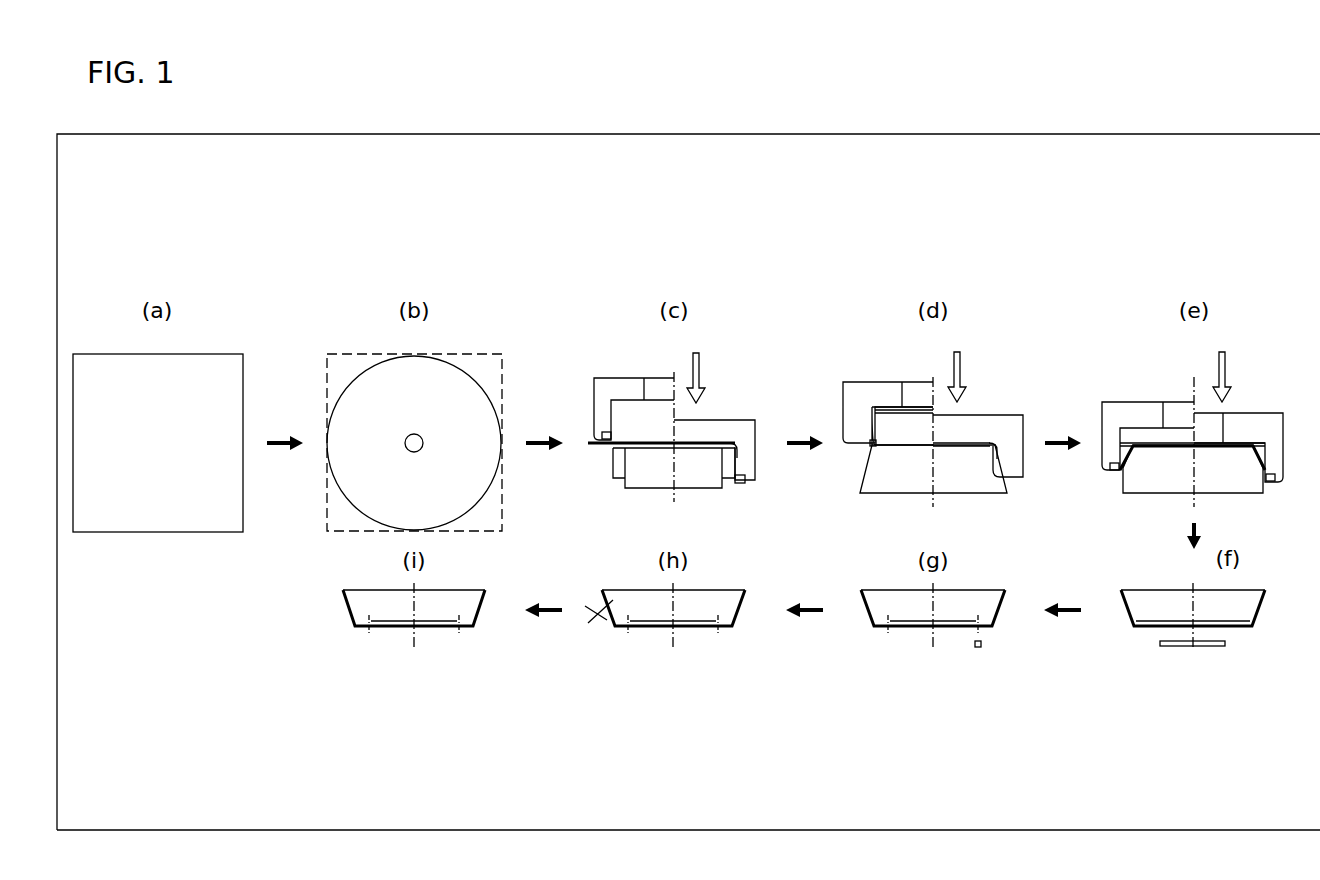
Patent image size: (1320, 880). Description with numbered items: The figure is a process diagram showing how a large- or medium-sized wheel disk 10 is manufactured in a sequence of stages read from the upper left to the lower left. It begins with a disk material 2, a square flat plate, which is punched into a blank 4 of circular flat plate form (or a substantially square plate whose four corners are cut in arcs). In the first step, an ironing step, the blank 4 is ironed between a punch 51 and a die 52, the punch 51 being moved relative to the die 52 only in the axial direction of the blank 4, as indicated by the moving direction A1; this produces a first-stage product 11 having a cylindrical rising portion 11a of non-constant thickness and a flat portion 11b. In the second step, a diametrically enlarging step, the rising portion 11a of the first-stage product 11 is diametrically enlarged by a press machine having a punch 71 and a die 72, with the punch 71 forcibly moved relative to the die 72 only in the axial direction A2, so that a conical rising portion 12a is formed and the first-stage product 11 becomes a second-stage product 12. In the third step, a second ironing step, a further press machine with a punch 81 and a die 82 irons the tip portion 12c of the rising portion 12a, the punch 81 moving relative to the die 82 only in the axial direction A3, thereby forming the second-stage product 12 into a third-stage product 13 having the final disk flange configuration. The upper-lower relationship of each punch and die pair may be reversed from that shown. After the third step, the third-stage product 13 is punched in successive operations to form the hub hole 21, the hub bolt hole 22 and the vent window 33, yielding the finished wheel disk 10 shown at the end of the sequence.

The disk material 2 is at (194, 372).
The blank 4 is at (437, 377).
The first-stage product 11 is at (707, 443).
The rising portion 11a is at (738, 462).
The flat portion 11b is at (729, 445).
The second-stage product 12 is at (975, 441).
The rising portion 12a is at (1003, 462).
The tip portion 12c is at (1124, 476).
The third-stage product 13 is at (1233, 444).
The wheel disk 10 is at (356, 632).
The hub hole 21 is at (1215, 627).
The hub bolt hole 22 is at (981, 629).
The vent window 33 is at (609, 613).
The punch 51 is at (646, 480).
The die 52 is at (604, 390).
The punch 71 is at (890, 484).
The die 72 is at (902, 392).
The punch 81 is at (1160, 482).
The die 82 is at (1270, 420).
The moving direction of the punch A1 is at (701, 365).
The moving direction of the punch A2 is at (961, 362).
The moving direction of the punch A3 is at (1226, 362).